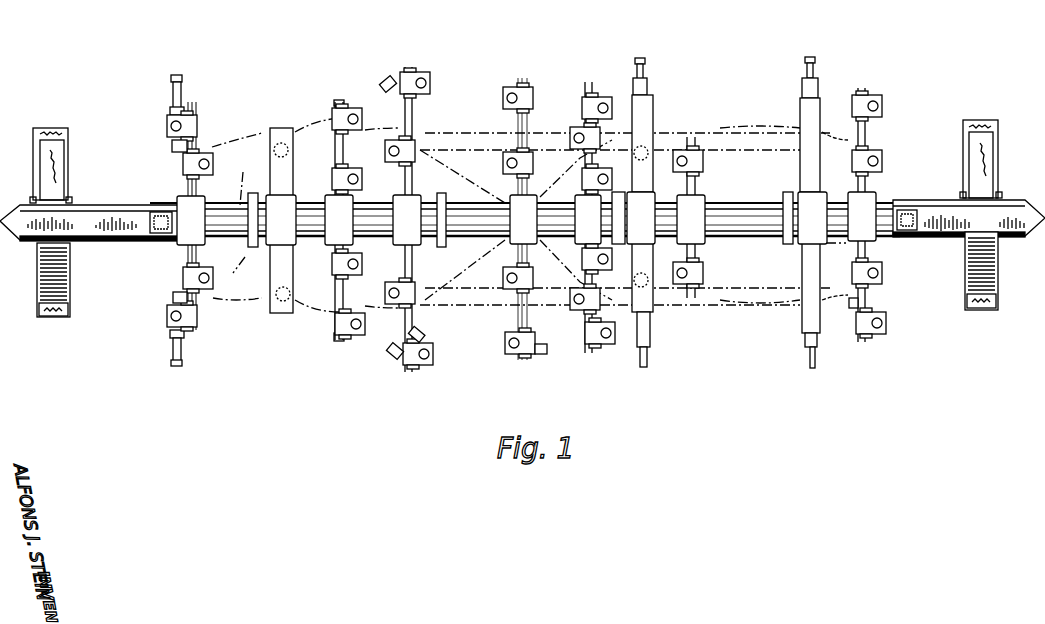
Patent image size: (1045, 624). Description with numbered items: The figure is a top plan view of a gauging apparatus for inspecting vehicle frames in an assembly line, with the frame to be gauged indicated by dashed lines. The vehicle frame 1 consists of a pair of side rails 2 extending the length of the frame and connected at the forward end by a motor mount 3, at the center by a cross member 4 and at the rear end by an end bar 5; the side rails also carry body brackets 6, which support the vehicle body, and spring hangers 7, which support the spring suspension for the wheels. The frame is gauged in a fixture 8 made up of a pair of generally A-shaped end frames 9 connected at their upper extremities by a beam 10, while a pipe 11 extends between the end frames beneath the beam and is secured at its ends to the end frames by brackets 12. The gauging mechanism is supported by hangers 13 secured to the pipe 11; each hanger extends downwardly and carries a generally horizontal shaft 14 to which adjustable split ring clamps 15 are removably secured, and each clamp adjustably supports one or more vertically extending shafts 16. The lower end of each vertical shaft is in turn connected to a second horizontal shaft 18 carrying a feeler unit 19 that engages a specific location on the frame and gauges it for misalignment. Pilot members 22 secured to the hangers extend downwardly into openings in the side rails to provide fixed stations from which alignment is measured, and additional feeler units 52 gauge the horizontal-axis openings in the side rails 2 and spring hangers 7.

The vehicle frame 1 is at (733, 90).
The side rails 2 is at (760, 133).
The motor mount 3 is at (263, 290).
The cross member 4 is at (456, 258).
The end bar 5 is at (848, 254).
The body brackets 6 is at (399, 125).
The spring hangers 7 is at (822, 140).
The fixture 8 is at (947, 345).
The A-shaped end frames 9 is at (70, 269).
The beam 10 is at (101, 218).
The pipe 11 is at (133, 204).
The brackets 12 is at (38, 199).
The hangers 13 is at (178, 200).
The horizontal shaft 14 is at (187, 258).
The adjustable split ring clamps 15 is at (200, 126).
The vertically extending shafts 16 is at (173, 143).
The second horizontal shaft 18 is at (421, 342).
The feeler unit 19 is at (383, 84).
The pilot members 22 is at (279, 131).
The feeler units 52 is at (168, 130).